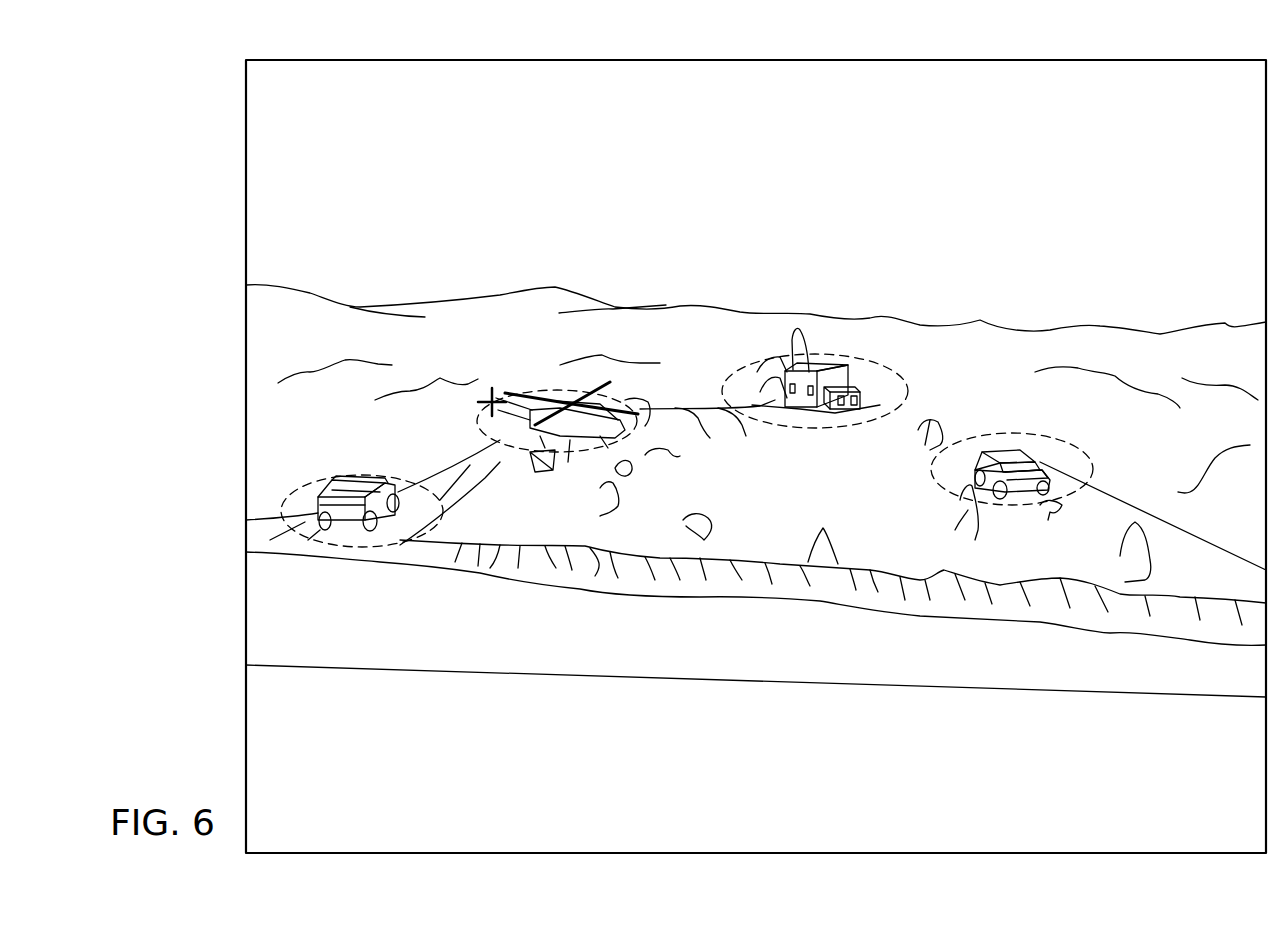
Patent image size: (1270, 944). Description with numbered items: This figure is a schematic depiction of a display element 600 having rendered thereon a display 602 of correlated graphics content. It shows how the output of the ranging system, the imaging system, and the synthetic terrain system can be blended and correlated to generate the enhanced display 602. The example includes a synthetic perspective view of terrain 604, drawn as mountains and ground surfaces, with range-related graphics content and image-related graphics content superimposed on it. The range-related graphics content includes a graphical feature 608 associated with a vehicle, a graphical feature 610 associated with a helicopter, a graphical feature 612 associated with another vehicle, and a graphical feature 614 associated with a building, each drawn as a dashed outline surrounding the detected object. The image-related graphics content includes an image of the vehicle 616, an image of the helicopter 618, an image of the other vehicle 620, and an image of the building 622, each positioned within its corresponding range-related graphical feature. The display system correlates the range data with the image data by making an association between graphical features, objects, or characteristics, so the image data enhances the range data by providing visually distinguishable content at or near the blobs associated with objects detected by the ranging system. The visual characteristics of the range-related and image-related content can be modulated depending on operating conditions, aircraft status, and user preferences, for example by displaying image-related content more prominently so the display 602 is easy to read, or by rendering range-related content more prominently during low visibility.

The display element 600 is at (1018, 60).
The display 602 is at (551, 104).
The terrain 604 is at (536, 286).
The graphical feature 608 is at (345, 548).
The graphical feature 610 is at (560, 390).
The graphical feature 612 is at (1040, 437).
The graphical feature 614 is at (906, 386).
The image of the vehicle 616 is at (397, 484).
The image of the helicopter 618 is at (572, 445).
The image of the other vehicle 620 is at (937, 479).
The image of the building 622 is at (850, 405).